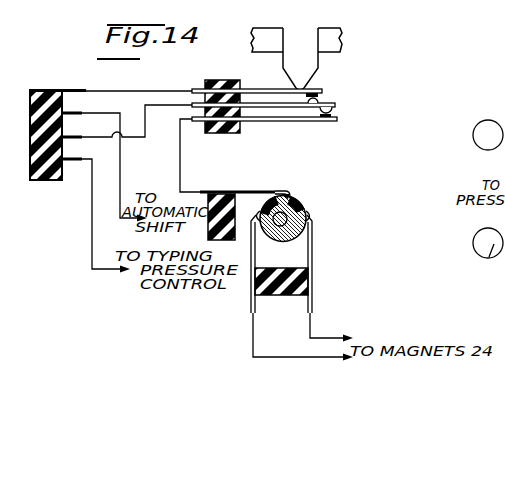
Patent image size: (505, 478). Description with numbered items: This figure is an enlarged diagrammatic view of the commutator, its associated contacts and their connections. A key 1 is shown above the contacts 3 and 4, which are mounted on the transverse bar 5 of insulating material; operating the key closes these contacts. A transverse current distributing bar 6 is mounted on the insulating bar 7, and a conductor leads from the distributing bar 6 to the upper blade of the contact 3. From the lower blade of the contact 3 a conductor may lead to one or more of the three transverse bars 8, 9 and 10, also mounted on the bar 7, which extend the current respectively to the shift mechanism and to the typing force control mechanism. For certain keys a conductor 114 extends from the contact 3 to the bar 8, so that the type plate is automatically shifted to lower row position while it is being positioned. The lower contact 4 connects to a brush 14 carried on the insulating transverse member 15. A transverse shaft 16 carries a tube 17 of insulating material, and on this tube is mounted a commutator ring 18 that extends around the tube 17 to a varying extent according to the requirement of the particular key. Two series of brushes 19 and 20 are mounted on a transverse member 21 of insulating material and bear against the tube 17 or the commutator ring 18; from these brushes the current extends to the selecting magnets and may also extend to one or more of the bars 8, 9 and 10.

The key 1 is at (254, 27).
The upper contact 3 is at (319, 97).
The lower contact 4 is at (334, 114).
The transverse bar 5 is at (243, 133).
The current distributing bar 6 is at (50, 89).
The insulating bar 7 is at (30, 135).
The transverse bar 8 is at (76, 113).
The transverse bar 9 is at (76, 137).
The transverse bar 10 is at (67, 162).
The conductor 114 is at (136, 135).
The brush 14 is at (257, 191).
The transverse member 15 is at (217, 192).
The transverse shaft 16 is at (302, 208).
The tube 17 is at (313, 229).
The commutator ring 18 is at (290, 197).
The brush 19 is at (255, 256).
The brush 20 is at (313, 254).
The transverse member 21 is at (285, 293).